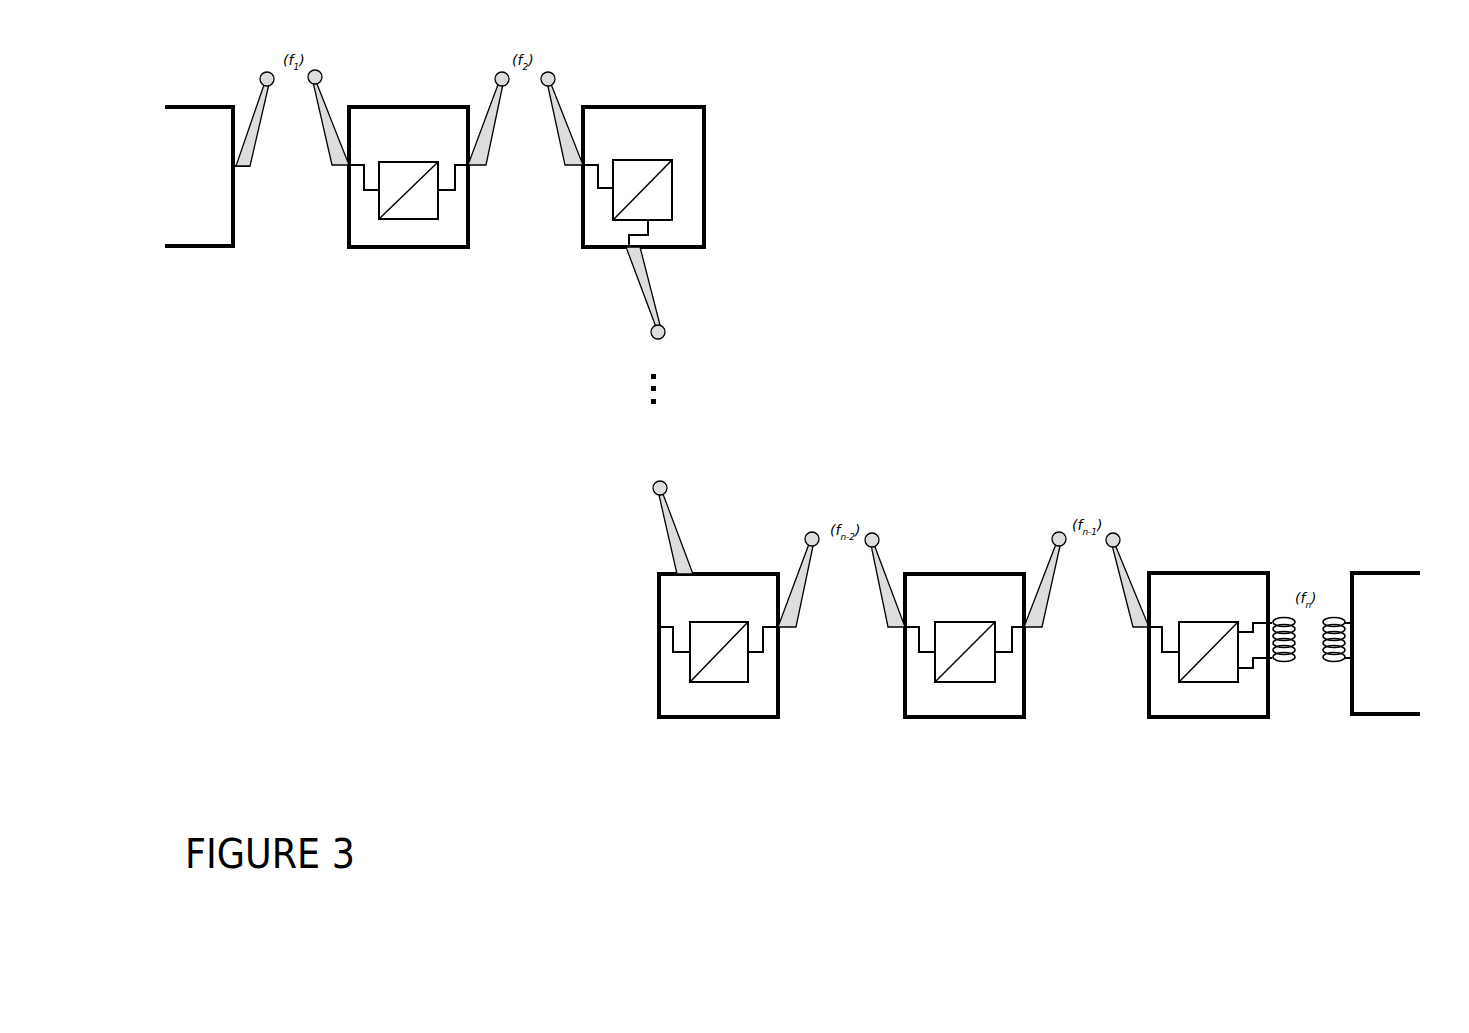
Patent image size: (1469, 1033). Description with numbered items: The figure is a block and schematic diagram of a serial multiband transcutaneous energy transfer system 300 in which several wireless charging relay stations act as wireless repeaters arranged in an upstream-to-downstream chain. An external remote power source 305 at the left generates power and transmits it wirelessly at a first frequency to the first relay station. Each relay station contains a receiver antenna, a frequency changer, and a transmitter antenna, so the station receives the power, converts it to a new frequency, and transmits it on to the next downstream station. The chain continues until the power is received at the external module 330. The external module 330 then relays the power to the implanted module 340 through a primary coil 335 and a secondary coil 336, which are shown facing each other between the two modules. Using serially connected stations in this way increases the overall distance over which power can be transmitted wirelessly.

The multiband TET system 300 is at (811, 856).
The remote power source 305 is at (202, 257).
The external module 330 is at (1220, 725).
The primary coil 335 is at (1287, 615).
The secondary coil 336 is at (1332, 615).
The implanted module 340 is at (1377, 720).